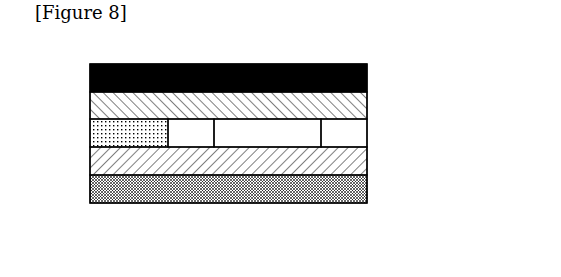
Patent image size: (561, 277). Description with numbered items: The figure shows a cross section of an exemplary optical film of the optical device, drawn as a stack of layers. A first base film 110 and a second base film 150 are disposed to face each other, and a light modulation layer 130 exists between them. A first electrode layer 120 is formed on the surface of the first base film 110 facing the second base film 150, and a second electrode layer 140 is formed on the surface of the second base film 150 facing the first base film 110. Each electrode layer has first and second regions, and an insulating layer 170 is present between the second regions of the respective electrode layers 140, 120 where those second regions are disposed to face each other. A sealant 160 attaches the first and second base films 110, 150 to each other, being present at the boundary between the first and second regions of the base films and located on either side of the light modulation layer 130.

The first base film 110 is at (89, 185).
The first electrode layer 120 is at (367, 160).
The light modulation layer 130 is at (270, 132).
The second electrode layer 140 is at (367, 105).
The second base film 150 is at (89, 72).
The sealant 160 is at (193, 132).
The insulating layer 170 is at (89, 130).